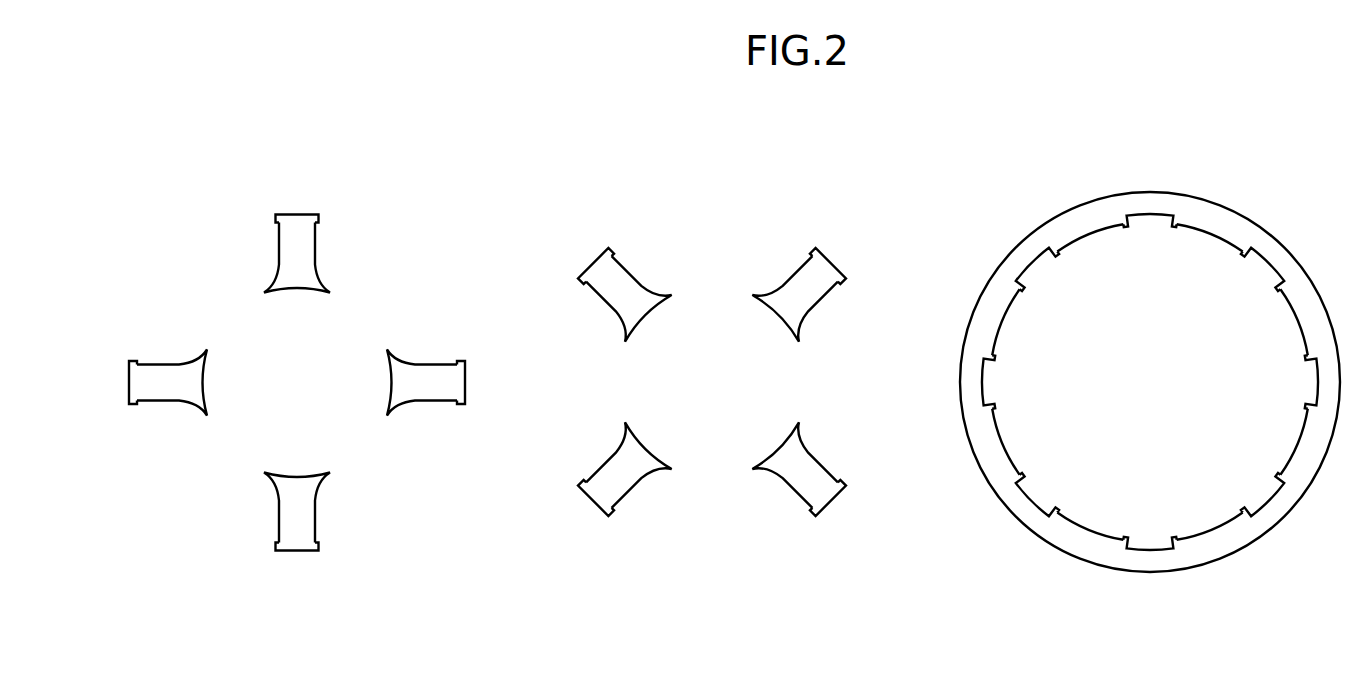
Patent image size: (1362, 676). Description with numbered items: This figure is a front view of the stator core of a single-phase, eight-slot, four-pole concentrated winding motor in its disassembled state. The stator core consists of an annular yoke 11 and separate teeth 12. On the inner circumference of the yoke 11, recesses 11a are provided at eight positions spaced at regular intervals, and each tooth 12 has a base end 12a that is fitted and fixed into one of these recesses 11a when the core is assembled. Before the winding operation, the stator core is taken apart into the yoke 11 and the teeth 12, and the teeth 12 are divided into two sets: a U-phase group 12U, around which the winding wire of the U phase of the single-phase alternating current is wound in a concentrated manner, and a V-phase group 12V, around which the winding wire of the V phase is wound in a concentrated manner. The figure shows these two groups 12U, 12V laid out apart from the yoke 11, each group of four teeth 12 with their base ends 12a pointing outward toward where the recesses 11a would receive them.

The annular yoke 11 is at (1150, 360).
The recess 11a is at (1262, 262).
The tooth 12 is at (490, 347).
The base end 12a is at (313, 215).
The U-phase group 12U is at (196, 253).
The V-phase group 12V is at (714, 211).